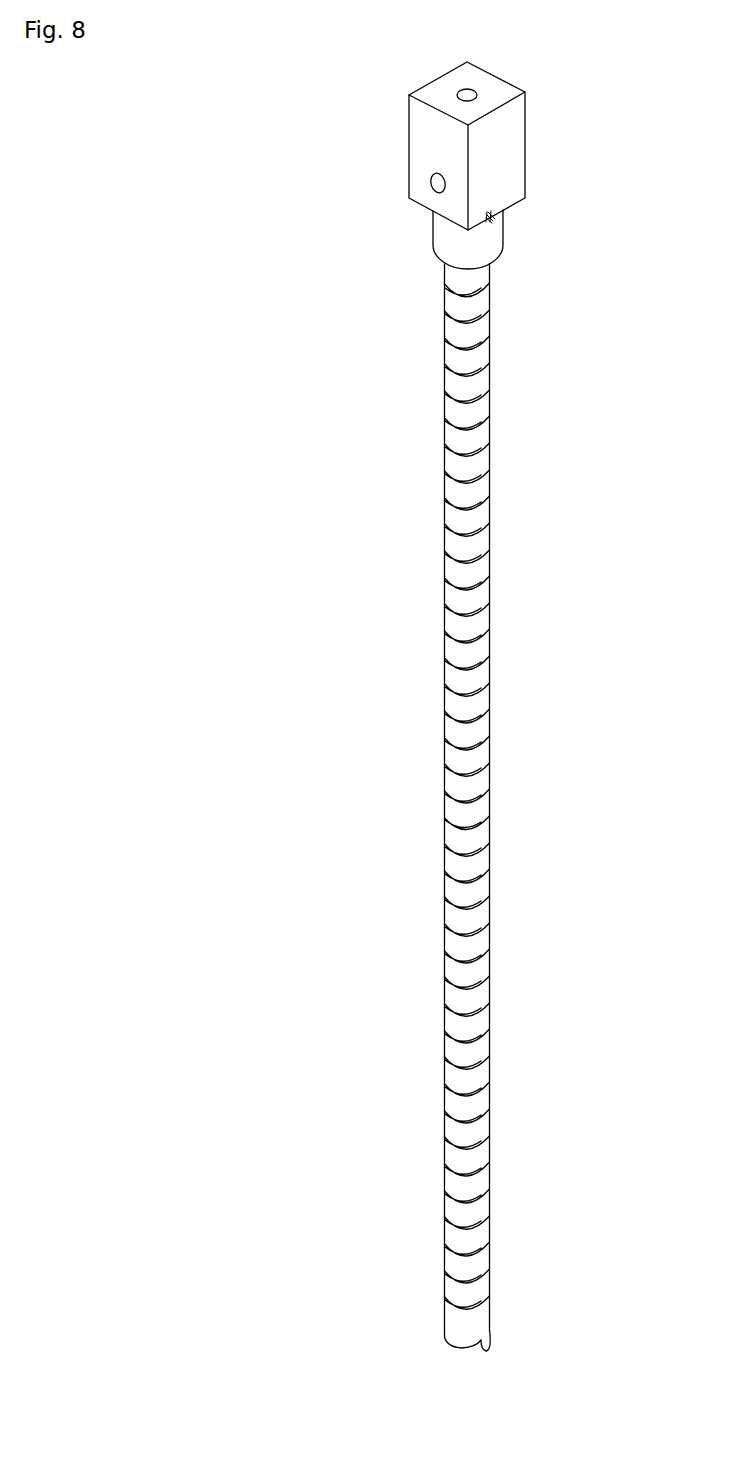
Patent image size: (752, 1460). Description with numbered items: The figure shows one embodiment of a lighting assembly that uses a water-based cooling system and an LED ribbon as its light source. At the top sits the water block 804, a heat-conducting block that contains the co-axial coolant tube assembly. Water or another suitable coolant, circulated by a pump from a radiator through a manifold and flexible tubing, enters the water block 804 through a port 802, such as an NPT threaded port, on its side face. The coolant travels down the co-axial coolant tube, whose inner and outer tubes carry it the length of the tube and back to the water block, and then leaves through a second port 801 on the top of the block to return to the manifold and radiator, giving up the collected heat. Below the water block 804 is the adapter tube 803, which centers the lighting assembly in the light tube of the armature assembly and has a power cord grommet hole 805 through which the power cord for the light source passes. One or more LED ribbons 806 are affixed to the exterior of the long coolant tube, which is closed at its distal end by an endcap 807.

The port 801 is at (452, 93).
The port 802 is at (432, 183).
The adapter tube 803 is at (432, 248).
The water block 804 is at (532, 152).
The power cord grommet hole 805 is at (493, 222).
The LED ribbon 806 is at (491, 562).
The endcap 807 is at (448, 1339).